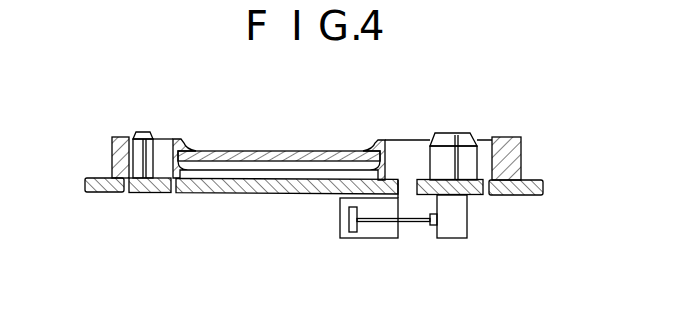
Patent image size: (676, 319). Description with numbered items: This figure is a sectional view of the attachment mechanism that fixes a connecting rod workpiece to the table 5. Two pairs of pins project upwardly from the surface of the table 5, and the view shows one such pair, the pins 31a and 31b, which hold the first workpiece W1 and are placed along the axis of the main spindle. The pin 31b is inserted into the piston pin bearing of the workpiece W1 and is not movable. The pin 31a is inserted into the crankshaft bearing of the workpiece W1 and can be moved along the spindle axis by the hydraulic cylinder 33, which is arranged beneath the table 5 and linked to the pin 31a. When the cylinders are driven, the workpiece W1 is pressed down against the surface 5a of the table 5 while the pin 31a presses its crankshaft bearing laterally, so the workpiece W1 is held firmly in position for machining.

The table 5 is at (543, 180).
The surface of the table 5a is at (86, 177).
The pin 31a is at (447, 140).
The pin 31b is at (142, 131).
The first workpiece W1 is at (297, 150).
The hydraulic cylinder 33 is at (372, 239).